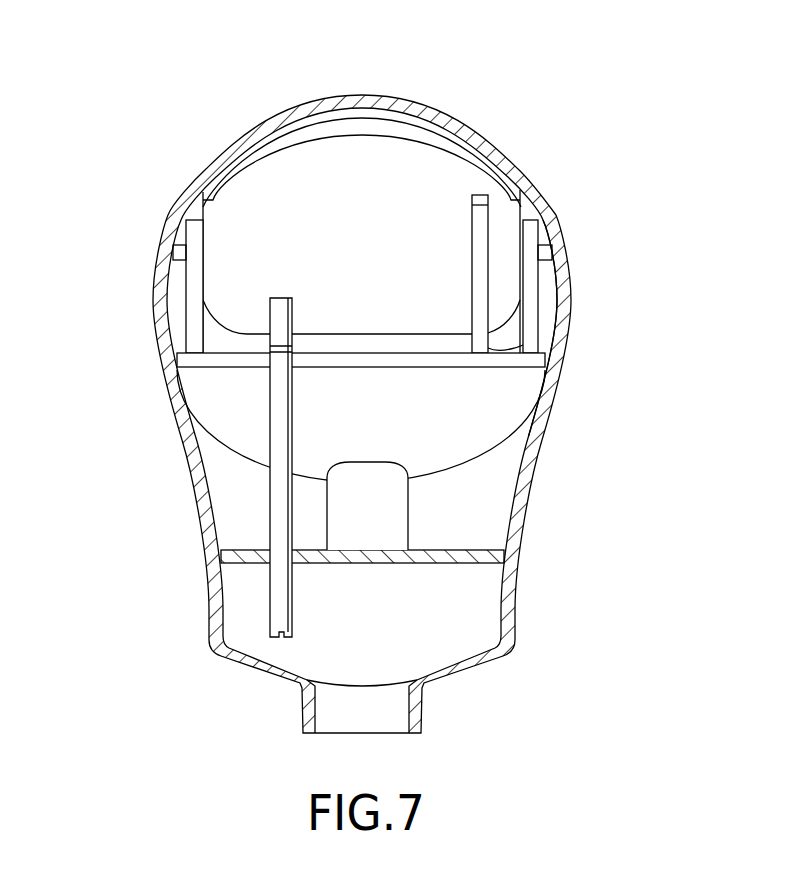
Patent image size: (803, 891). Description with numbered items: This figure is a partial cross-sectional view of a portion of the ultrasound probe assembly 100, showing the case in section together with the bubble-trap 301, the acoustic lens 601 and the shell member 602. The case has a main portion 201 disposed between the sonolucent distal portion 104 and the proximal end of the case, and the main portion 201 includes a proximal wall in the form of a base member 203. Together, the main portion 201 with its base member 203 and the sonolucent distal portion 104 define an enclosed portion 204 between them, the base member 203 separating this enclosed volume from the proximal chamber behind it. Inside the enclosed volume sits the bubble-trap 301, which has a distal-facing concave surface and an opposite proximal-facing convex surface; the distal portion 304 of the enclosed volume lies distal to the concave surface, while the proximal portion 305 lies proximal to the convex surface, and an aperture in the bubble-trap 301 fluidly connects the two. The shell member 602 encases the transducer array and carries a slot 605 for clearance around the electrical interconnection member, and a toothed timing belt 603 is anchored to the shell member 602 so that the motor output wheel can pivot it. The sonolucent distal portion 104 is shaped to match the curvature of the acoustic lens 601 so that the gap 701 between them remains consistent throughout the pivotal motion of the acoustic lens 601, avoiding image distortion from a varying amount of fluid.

The probe assembly 100 is at (158, 104).
The sonolucent distal portion 104 is at (479, 128).
The main portion 201 is at (550, 430).
The base member 203 is at (474, 549).
The enclosed portion 204 is at (227, 492).
The bubble-trap 301 is at (497, 450).
The distal portion 304 is at (371, 262).
The proximal portion 305 is at (469, 515).
The acoustic lens 601 is at (527, 170).
The shell member 602 is at (357, 147).
The timing belt 603 is at (538, 338).
The slot 605 is at (270, 302).
The gap 701 is at (433, 123).